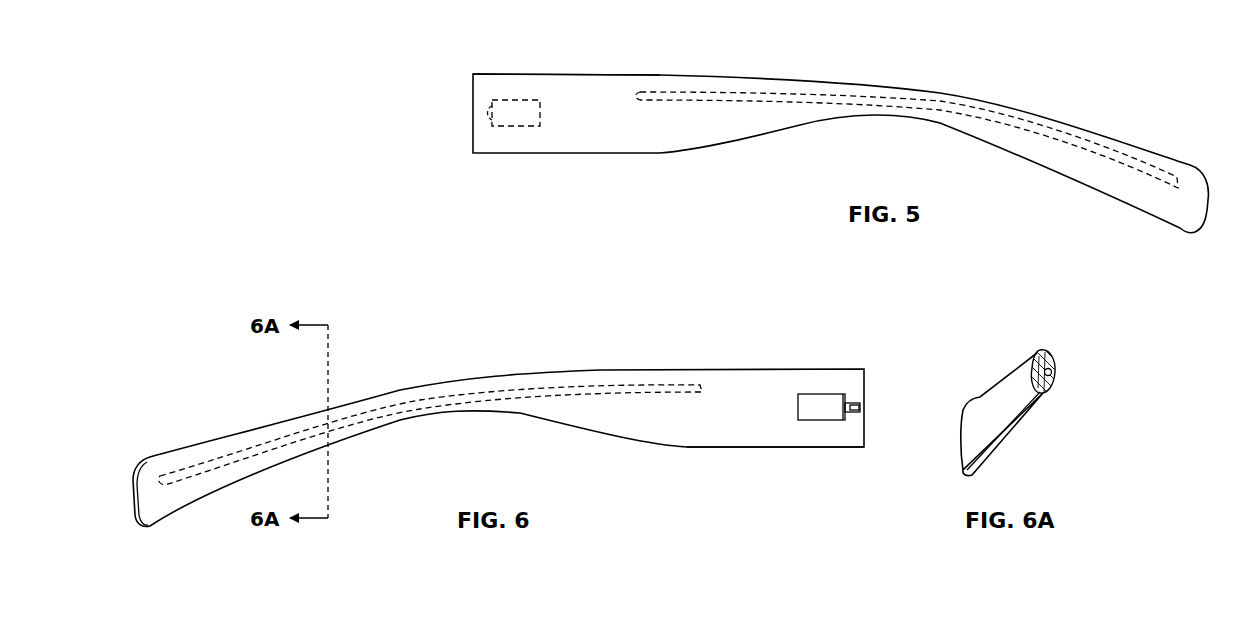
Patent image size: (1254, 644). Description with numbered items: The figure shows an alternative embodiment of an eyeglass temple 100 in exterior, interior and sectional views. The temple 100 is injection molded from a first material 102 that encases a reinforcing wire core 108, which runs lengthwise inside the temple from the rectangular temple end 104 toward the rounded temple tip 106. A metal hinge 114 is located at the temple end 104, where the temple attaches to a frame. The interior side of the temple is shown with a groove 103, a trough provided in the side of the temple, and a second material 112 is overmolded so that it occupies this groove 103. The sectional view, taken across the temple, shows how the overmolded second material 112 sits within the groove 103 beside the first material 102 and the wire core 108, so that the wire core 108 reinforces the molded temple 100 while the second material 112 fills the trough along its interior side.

In FIG. 5, the temple 100 is at (1000, 78).
In FIG. 6, the temple 100 is at (436, 313).
In FIG. 5, the first material 102 is at (560, 95).
In FIG. 6A, the first material 102 is at (1055, 380).
In FIG. 6A, the groove 103 is at (1048, 395).
In FIG. 5, the temple end 104 is at (473, 111).
In FIG. 6, the temple end 104 is at (866, 380).
In FIG. 5, the temple tip 106 is at (1207, 231).
In FIG. 6, the temple tip 106 is at (133, 520).
In FIG. 5, the wire core 108 is at (758, 92).
In FIG. 6, the wire core 108 is at (590, 378).
In FIG. 6A, the wire core 108 is at (1058, 368).
In FIG. 6, the second material 112 is at (717, 422).
In FIG. 6A, the second material 112 is at (983, 410).
In FIG. 5, the metal hinge 114 is at (518, 128).
In FIG. 6, the metal hinge 114 is at (825, 408).